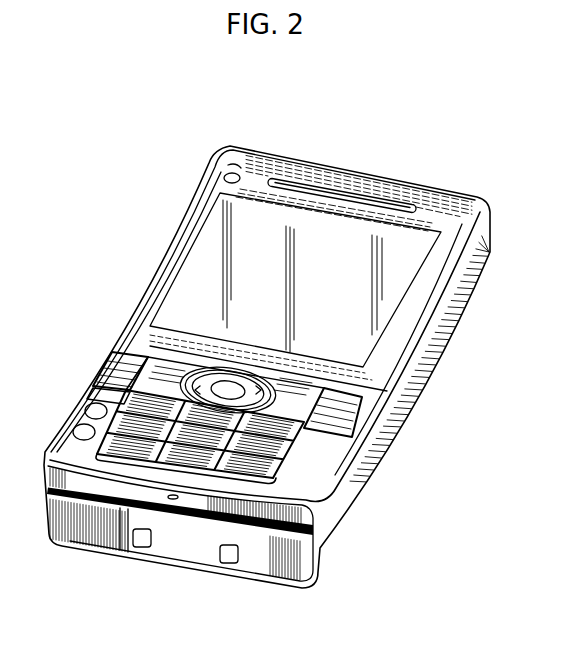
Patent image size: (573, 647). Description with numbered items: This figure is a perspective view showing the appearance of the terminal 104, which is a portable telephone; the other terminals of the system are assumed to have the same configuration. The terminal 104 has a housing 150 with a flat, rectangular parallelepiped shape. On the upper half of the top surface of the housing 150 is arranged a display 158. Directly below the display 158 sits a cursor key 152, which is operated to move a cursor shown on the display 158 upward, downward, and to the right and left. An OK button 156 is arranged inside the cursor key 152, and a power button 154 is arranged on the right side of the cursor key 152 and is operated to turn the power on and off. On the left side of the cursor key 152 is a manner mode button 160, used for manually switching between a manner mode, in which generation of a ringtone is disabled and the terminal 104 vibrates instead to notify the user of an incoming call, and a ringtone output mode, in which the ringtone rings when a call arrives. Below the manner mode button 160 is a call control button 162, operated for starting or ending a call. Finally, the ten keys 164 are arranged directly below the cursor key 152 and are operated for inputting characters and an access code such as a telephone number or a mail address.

The terminal 104 is at (376, 136).
The housing 150 is at (448, 201).
The cursor key 152 is at (340, 378).
The power button 154 is at (375, 416).
The OK button 156 is at (265, 400).
The display 158 is at (202, 263).
The manner mode button 160 is at (112, 355).
The call control button 162 is at (95, 383).
The ten keys 164 is at (146, 445).